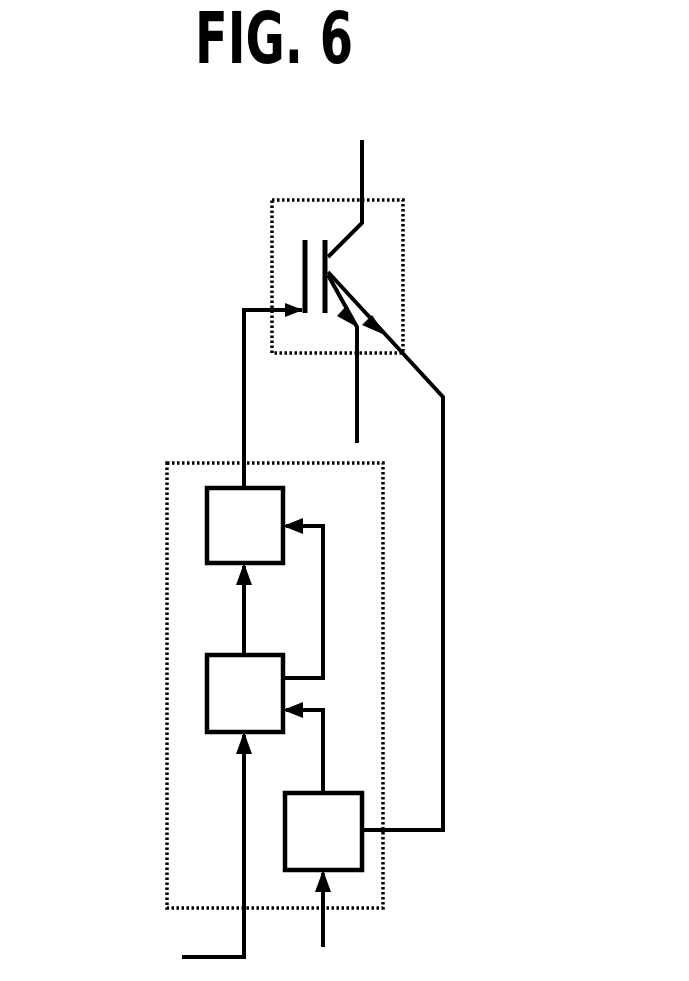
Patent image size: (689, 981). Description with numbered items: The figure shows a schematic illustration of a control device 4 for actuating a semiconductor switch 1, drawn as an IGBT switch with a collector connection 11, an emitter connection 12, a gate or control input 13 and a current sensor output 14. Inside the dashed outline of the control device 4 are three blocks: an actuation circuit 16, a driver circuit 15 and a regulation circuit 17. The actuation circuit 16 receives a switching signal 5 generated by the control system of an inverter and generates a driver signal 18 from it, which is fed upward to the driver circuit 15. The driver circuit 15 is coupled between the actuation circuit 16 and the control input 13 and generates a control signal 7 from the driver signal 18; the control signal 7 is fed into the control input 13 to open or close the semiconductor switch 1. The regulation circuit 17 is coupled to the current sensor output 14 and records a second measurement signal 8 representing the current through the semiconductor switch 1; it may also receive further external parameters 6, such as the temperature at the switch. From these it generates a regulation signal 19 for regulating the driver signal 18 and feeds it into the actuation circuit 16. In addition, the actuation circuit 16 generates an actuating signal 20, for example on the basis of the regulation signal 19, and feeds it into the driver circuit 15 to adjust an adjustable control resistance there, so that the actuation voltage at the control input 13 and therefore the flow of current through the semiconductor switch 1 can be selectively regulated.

The semiconductor switch 1 is at (310, 200).
The control device 4 is at (167, 812).
The switching signal 5 is at (207, 957).
The external parameters 6 is at (323, 935).
The control signal 7 is at (244, 427).
The second measurement signal 8 is at (443, 433).
The collector connection 11 is at (368, 218).
The emitter connection 12 is at (357, 380).
The control input 13 is at (297, 300).
The current sensor output 14 is at (370, 307).
The driver circuit 15 is at (207, 530).
The actuation circuit 16 is at (207, 700).
The regulation circuit 17 is at (362, 857).
The driver signal 18 is at (244, 621).
The regulation signal 19 is at (323, 750).
The actuating signal 20 is at (323, 583).